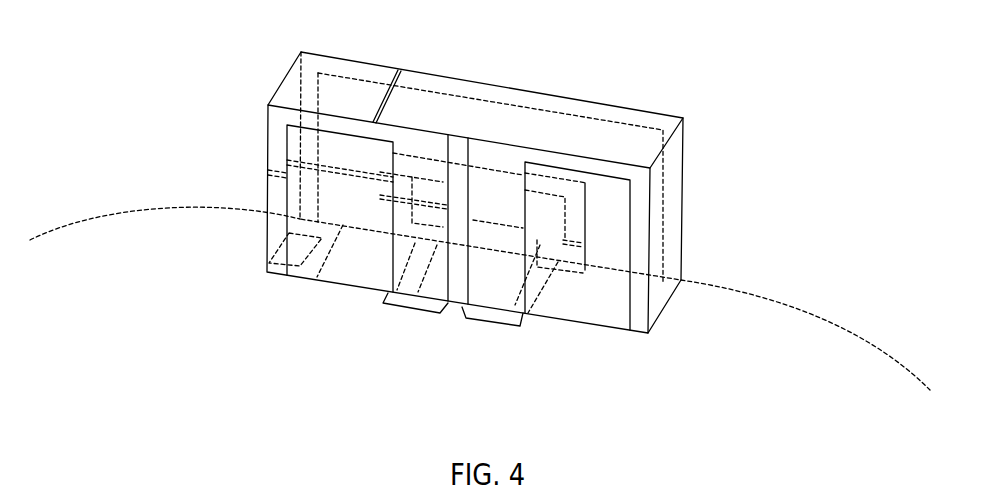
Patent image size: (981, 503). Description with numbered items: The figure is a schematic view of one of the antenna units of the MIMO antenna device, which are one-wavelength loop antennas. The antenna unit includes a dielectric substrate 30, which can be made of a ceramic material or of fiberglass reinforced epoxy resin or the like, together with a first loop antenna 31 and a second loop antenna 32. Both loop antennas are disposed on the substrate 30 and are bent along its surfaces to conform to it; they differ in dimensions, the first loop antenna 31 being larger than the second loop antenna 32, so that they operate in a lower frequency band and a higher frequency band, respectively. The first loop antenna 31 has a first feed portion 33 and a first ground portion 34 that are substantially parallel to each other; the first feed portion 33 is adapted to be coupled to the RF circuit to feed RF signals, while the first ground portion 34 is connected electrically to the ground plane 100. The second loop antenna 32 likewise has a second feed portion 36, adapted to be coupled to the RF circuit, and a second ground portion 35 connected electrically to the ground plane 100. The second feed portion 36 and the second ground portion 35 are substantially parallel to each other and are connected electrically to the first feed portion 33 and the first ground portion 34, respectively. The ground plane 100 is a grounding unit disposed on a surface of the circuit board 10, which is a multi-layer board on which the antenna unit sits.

The circuit board 10 is at (768, 322).
The dielectric substrate 30 is at (530, 127).
The first loop antenna 31 is at (640, 190).
The second loop antenna 32 is at (577, 210).
The first feed portion 33 is at (423, 303).
The first ground portion 34 is at (468, 317).
The second ground portion 35 is at (537, 280).
The second feed portion 36 is at (393, 268).
The ground plane 100 is at (230, 283).